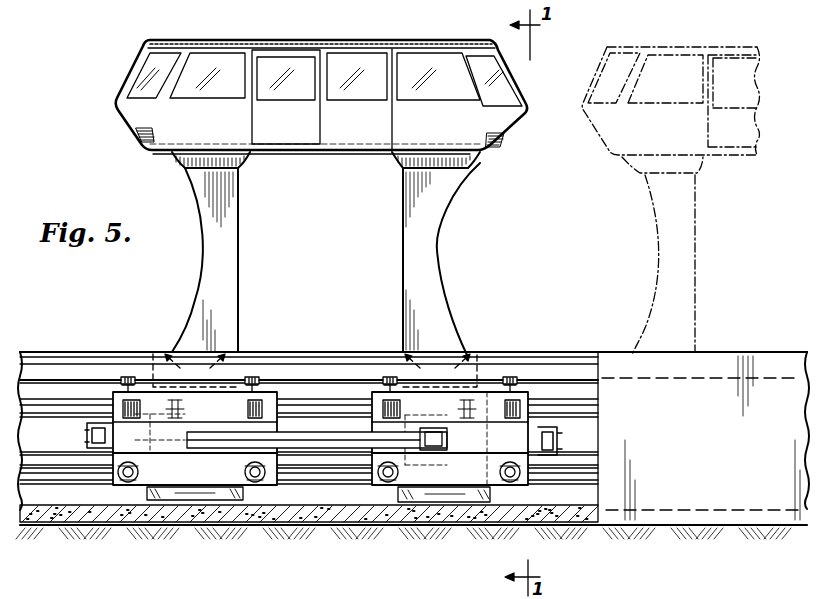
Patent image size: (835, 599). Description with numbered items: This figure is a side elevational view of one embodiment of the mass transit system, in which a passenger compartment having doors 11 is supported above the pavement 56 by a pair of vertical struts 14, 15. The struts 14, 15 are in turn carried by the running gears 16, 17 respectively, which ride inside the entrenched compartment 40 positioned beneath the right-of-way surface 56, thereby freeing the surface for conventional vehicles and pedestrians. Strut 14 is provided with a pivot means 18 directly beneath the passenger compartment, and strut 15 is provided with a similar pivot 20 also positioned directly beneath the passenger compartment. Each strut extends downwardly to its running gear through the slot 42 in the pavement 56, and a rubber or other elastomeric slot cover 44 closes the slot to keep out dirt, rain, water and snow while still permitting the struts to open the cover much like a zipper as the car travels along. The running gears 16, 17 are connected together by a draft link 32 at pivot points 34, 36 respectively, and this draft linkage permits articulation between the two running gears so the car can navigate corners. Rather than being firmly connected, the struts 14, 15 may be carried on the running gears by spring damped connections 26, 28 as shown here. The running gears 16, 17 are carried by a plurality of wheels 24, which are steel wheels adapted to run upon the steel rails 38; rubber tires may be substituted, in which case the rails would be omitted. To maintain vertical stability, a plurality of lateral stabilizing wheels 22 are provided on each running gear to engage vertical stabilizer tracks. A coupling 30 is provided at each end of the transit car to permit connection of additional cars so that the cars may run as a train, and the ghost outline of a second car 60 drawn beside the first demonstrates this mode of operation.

The doors 11 is at (304, 44).
The strut 14 is at (432, 252).
The strut 15 is at (234, 252).
The running gear 16 is at (533, 462).
The running gear 17 is at (104, 440).
The pivot means 18 is at (440, 180).
The pivot 20 is at (200, 180).
The lateral stabilizing wheels 22 is at (127, 376).
The wheels 24 is at (135, 486).
The spring damped connection 26 is at (180, 505).
The spring damped connection 28 is at (443, 505).
The coupling 30 is at (88, 436).
The draft link 32 is at (305, 432).
The pivot point 34 is at (462, 350).
The pivot point 36 is at (247, 374).
The rails 38 is at (53, 486).
The entrenched compartment 40 is at (33, 360).
The slot 42 is at (80, 362).
The slot cover 44 is at (170, 354).
The pavement 56 is at (58, 355).
The second car 60 is at (700, 46).